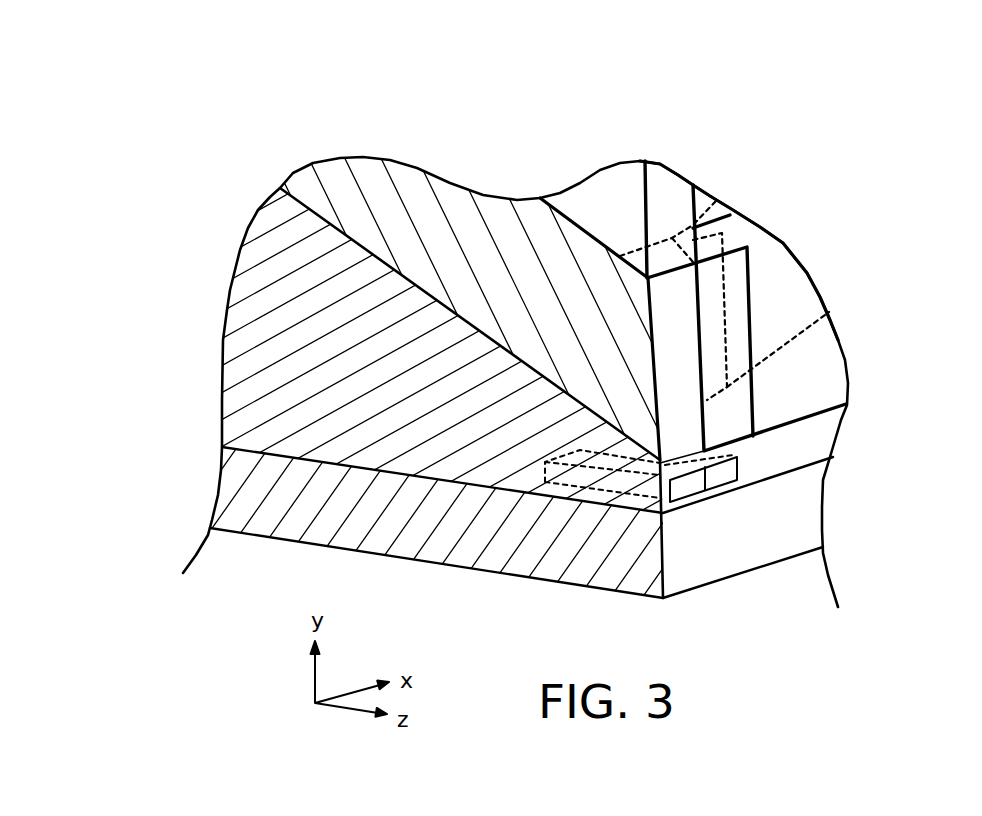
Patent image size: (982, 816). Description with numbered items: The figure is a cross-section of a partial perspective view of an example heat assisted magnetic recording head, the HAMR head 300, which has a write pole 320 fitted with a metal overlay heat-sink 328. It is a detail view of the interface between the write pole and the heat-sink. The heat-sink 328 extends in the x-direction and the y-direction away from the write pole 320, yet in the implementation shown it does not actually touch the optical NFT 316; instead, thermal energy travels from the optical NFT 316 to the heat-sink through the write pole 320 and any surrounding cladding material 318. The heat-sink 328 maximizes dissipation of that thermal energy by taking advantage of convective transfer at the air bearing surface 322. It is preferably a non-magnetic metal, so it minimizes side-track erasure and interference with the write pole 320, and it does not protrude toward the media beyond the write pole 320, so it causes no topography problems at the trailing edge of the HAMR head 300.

The HAMR head 300 is at (178, 137).
The optical NFT 316 is at (705, 490).
The cladding material 318 is at (439, 408).
The write pole 320 is at (556, 309).
The air bearing surface 322 is at (840, 411).
The metal overlay heat-sink 328 is at (818, 392).